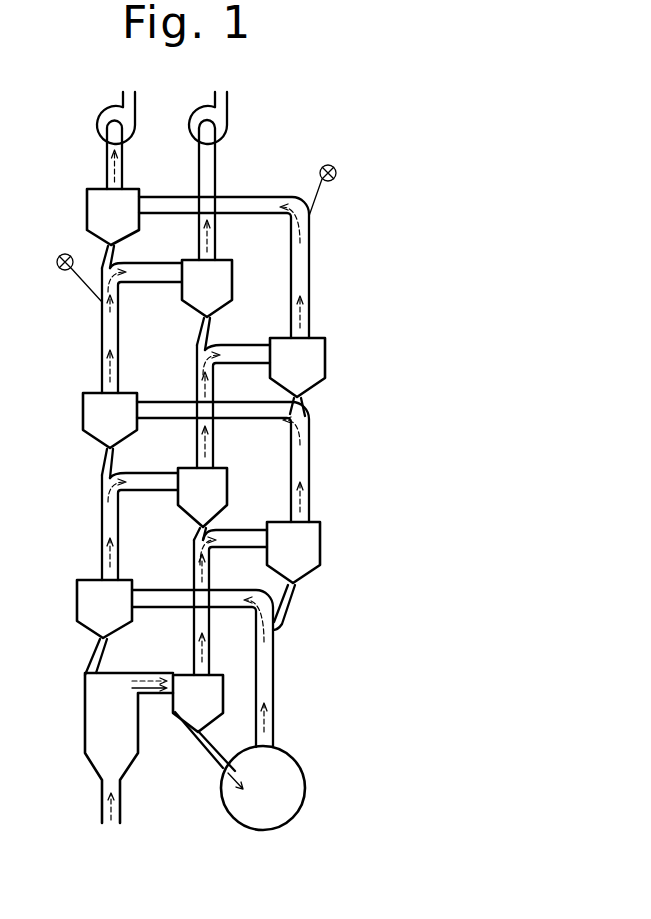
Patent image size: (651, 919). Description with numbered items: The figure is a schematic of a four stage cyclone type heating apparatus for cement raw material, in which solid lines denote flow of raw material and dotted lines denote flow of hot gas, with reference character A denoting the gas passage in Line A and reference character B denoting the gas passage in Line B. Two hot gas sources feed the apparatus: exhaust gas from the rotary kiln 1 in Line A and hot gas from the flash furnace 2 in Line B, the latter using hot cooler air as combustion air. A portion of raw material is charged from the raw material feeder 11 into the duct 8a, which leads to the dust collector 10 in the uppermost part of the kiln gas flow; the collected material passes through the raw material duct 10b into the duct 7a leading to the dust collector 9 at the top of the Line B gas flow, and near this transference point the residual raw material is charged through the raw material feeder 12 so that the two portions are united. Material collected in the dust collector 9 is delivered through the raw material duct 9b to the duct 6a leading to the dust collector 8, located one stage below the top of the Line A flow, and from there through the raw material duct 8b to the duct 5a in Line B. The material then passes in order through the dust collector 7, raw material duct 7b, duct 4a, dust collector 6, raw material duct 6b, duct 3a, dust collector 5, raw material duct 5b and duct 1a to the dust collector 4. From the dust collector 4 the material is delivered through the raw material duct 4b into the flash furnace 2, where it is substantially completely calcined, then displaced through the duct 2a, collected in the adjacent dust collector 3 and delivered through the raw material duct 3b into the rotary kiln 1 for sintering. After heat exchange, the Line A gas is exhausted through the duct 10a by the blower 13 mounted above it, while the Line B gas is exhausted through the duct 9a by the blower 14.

The rotary kiln 1 is at (263, 788).
The duct 1a is at (274, 682).
The flash furnace 2 is at (129, 748).
The duct 2a is at (150, 673).
The dust collector 3 is at (198, 703).
The duct 3a is at (209, 658).
The raw material duct 3b is at (212, 762).
The dust collector 4 is at (104, 609).
The duct 4a is at (100, 536).
The raw material duct 4b is at (90, 658).
The dust collector 5 is at (293, 552).
The duct 5a is at (308, 462).
The raw material duct 5b is at (285, 611).
The dust collector 6 is at (202, 497).
The duct 6a is at (198, 385).
The raw material duct 6b is at (198, 531).
The dust collector 7 is at (110, 420).
The duct 7a is at (102, 342).
The raw material duct 7b is at (110, 462).
The dust collector 8 is at (297, 367).
The duct 8a is at (310, 272).
The raw material duct 8b is at (303, 404).
The dust collector 9 is at (207, 288).
The duct 9a is at (199, 179).
The raw material duct 9b is at (213, 328).
The dust collector 10 is at (113, 217).
The duct 10a is at (123, 161).
The raw material duct 10b is at (114, 256).
The raw material feeder 11 is at (334, 168).
The raw material feeder 12 is at (60, 255).
The blower 13 is at (135, 107).
The blower 14 is at (227, 107).
The gas passage in Line A is at (99, 160).
The gas passage in Line B is at (223, 160).